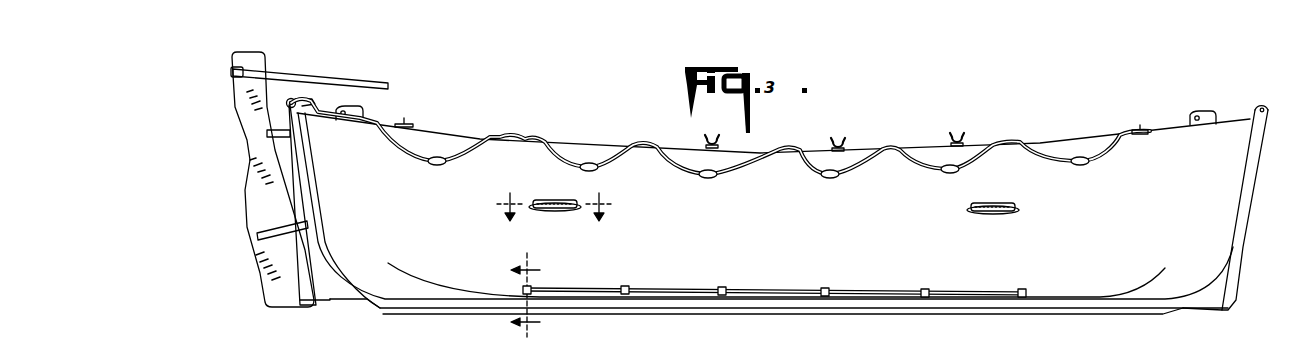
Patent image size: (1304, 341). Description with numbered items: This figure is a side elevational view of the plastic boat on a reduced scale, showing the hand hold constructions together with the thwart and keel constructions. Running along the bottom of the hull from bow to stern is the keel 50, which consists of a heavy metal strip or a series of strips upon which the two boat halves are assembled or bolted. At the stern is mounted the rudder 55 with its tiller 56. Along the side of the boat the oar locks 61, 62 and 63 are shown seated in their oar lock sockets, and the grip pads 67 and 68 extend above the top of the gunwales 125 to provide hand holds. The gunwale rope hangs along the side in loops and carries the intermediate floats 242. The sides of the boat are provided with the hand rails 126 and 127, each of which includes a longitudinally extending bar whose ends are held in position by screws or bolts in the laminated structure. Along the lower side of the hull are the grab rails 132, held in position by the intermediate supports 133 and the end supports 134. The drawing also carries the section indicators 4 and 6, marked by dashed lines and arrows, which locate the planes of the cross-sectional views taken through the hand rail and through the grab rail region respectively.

The keel 50 is at (782, 314).
The rudder 55 is at (250, 187).
The tiller 56 is at (312, 76).
The oar lock 61 is at (704, 143).
The oar lock 62 is at (847, 140).
The oar lock 63 is at (962, 135).
The grip pad 67 is at (410, 123).
The grip pad 68 is at (1140, 128).
The gunwales 125 is at (805, 151).
The hand rail 126 is at (1008, 194).
The hand rail 127 is at (560, 191).
The grab rails 132 is at (685, 276).
The intermediate supports 133 is at (625, 295).
The end supports 134 is at (531, 286).
The intermediate floats 242 is at (708, 178).
The section line 4- 4 is at (555, 218).
The section line 6- 6 is at (515, 295).